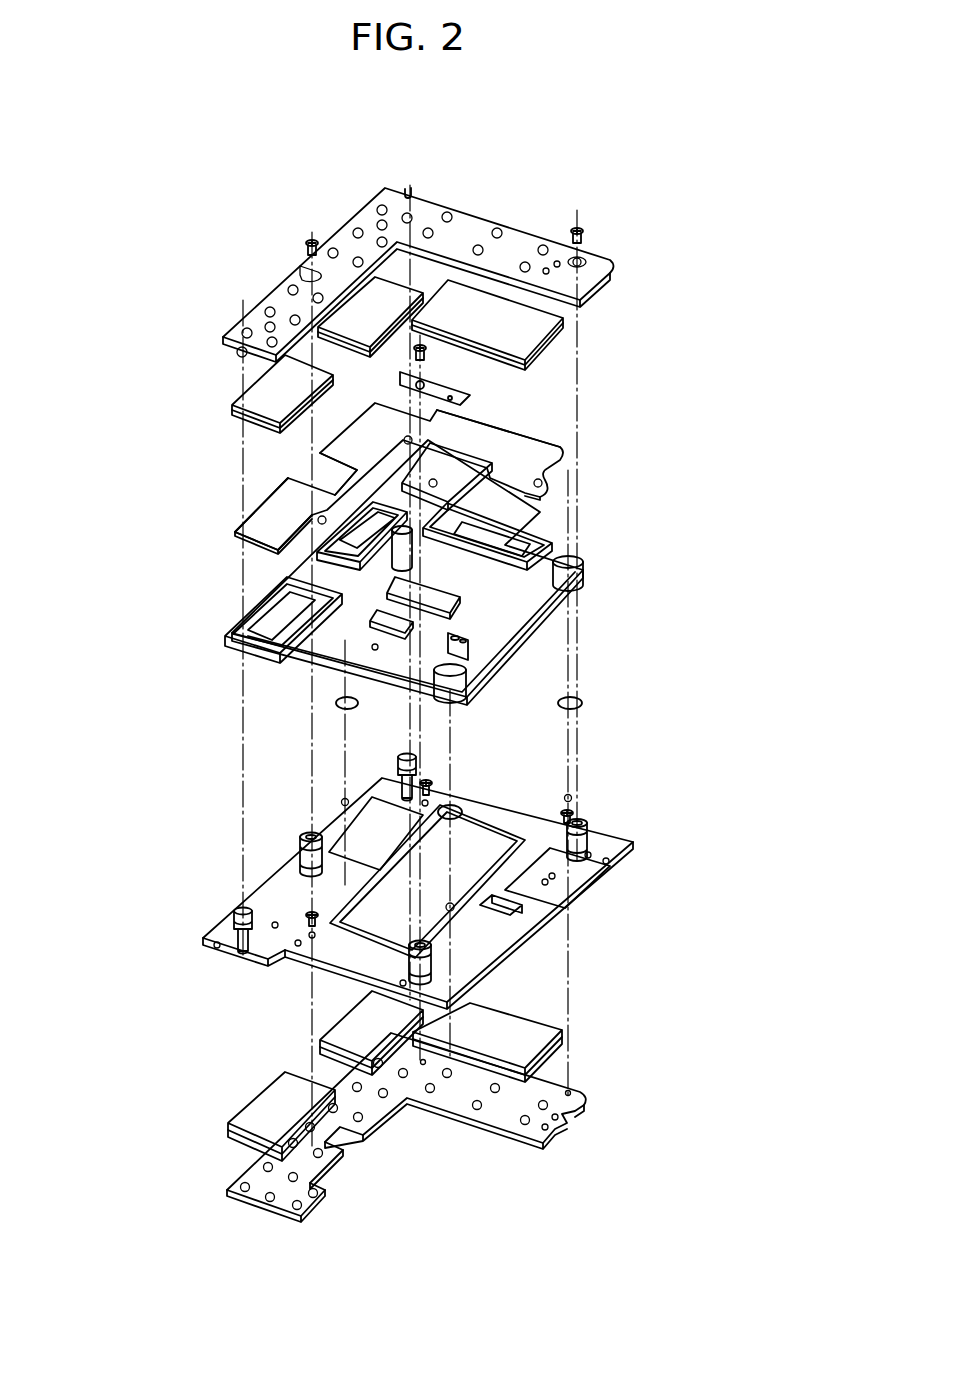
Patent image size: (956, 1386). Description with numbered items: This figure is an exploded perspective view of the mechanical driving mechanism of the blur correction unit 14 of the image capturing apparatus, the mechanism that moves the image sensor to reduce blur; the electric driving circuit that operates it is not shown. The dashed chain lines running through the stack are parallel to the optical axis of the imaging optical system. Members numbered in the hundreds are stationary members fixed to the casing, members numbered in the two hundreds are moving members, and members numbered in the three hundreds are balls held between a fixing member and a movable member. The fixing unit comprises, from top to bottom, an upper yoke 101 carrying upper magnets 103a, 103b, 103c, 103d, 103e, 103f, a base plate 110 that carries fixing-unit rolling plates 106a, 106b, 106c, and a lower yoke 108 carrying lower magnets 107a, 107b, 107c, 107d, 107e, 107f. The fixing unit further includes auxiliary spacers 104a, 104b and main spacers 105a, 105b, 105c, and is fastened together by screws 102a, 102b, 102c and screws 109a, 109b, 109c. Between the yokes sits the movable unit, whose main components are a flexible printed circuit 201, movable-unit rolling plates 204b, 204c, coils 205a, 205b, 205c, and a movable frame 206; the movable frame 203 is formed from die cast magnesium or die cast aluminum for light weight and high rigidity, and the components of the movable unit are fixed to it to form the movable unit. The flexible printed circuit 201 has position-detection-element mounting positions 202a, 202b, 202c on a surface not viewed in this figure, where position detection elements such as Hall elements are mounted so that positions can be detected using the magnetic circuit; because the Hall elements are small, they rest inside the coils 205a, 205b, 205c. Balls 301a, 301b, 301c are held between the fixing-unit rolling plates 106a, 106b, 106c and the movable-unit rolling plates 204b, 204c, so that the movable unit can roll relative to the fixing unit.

The blur correction unit 14 is at (132, 198).
The upper yoke 101 is at (595, 257).
The screw 102a is at (585, 228).
The screw 102b is at (312, 238).
The screw 102c is at (445, 360).
The upper magnet 103a is at (545, 320).
The upper magnet 103b is at (525, 345).
The upper magnet 103c is at (370, 318).
The upper magnet 103d is at (345, 332).
The upper magnet 103e is at (262, 398).
The upper magnet 103f is at (265, 410).
The flexible printed circuit 201 is at (540, 465).
The position-detection-element mounting position 202a is at (490, 438).
The position-detection-element mounting position 202b is at (325, 446).
The position-detection-element mounting position 202c is at (285, 512).
The movable frame 203 is at (520, 625).
The movable-unit rolling plate 204b is at (458, 818).
The movable-unit rolling plate 204c is at (335, 703).
The coil 205a is at (540, 530).
The coil 205b is at (325, 555).
The coil 205c is at (262, 610).
The movable frame 206 is at (580, 575).
The auxiliary spacer 104a is at (412, 765).
The auxiliary spacer 104b is at (230, 932).
The main spacer 105a is at (590, 842).
The main spacer 105b is at (430, 950).
The main spacer 105c is at (300, 840).
The fixing-unit rolling plate 106a is at (580, 873).
The fixing-unit rolling plate 106b is at (470, 985).
The fixing-unit rolling plate 106c is at (290, 885).
The lower magnet 107a is at (530, 1030).
The lower magnet 107b is at (520, 1050).
The lower magnet 107c is at (338, 1042).
The lower magnet 107d is at (365, 1047).
The lower magnet 107e is at (258, 1098).
The lower magnet 107f is at (250, 1122).
The lower yoke 108 is at (240, 1190).
The screw 109a is at (578, 818).
The screw 109b is at (432, 785).
The screw 109c is at (300, 933).
The base plate 110 is at (343, 958).
The ball 301a is at (572, 795).
The ball 301b is at (455, 910).
The ball 301c is at (340, 800).